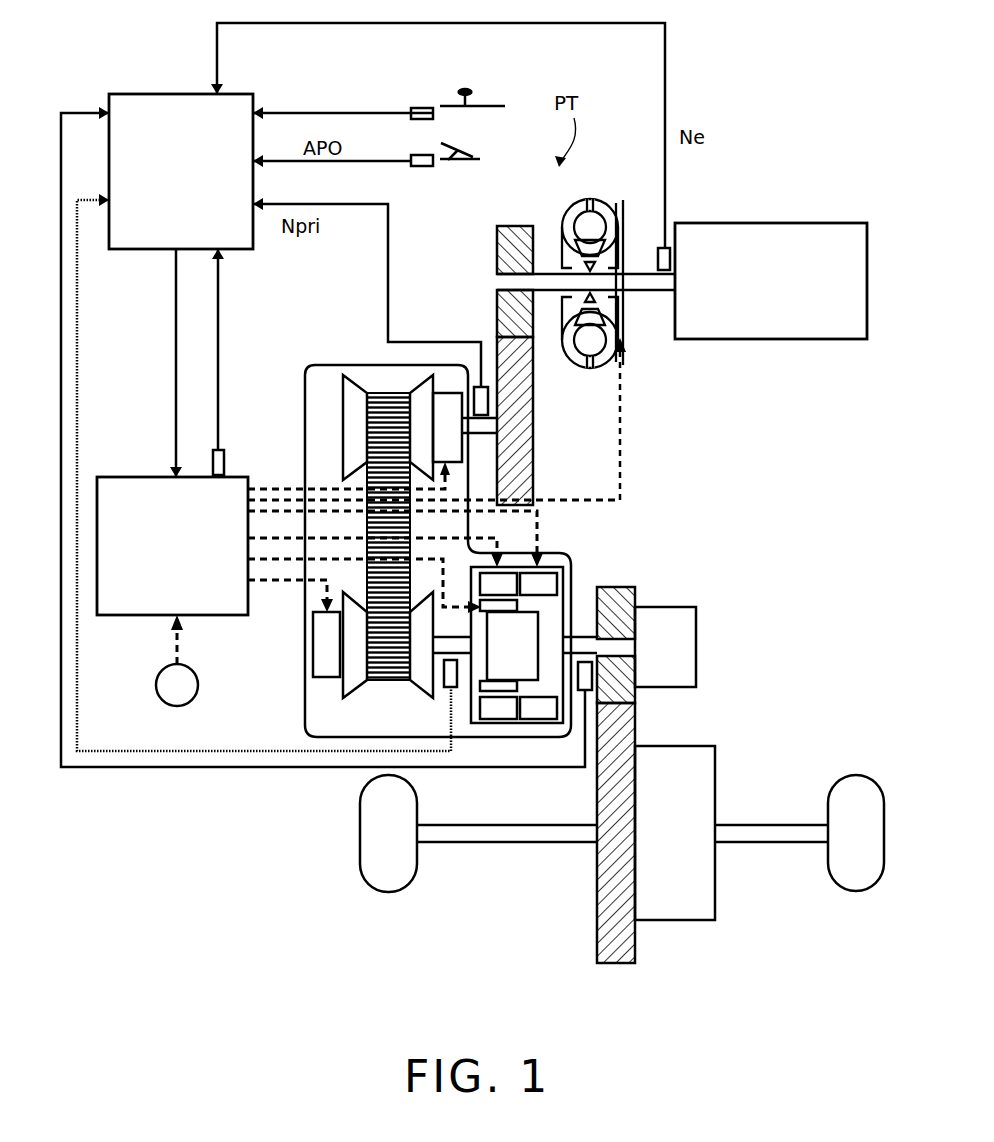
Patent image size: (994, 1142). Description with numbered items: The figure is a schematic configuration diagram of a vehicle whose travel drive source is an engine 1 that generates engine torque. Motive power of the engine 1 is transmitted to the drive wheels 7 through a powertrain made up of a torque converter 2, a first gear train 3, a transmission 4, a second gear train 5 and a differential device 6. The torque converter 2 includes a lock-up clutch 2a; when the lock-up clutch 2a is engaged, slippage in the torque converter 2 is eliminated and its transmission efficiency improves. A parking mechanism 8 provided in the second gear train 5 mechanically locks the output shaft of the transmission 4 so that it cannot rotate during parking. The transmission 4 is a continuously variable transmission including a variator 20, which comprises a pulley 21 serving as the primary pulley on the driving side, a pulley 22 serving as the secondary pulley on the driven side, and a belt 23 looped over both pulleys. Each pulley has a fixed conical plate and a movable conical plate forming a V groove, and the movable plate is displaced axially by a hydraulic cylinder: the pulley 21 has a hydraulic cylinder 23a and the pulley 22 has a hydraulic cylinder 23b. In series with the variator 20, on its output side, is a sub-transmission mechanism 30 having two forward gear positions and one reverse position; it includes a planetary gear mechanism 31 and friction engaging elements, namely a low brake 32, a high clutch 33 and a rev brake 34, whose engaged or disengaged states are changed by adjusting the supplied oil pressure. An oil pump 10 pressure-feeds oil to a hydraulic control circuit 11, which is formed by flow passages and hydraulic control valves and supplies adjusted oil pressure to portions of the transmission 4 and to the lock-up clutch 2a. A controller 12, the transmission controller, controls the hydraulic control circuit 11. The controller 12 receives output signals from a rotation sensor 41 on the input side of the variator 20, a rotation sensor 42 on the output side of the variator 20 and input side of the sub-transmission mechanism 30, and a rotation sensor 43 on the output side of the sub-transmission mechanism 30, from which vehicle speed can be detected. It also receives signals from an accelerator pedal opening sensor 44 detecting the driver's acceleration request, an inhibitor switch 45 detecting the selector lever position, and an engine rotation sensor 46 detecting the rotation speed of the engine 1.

The engine 1 is at (852, 232).
The torque converter 2 is at (628, 290).
The lock-up clutch 2a is at (624, 308).
The first gear train 3 is at (516, 218).
The transmission 4 is at (356, 366).
The second gear train 5 is at (617, 976).
The differential device 6 is at (668, 906).
The drive wheels 7 is at (388, 892).
The parking mechanism 8 is at (698, 633).
The oil pump 10 is at (158, 672).
The hydraulic control circuit 11 is at (128, 482).
The controller 12 is at (240, 104).
The variator 20 is at (324, 396).
The pulley 21 is at (355, 426).
The pulley 22 is at (353, 662).
The belt 23 is at (391, 396).
The hydraulic cylinder 23a is at (446, 410).
The hydraulic cylinder 23b is at (323, 652).
The sub-transmission mechanism 30 is at (565, 575).
The planetary gear mechanism 31 is at (522, 628).
The low brake 32 is at (503, 585).
The high clutch 33 is at (486, 605).
The rev brake 34 is at (537, 583).
The rotation sensor 41 is at (482, 398).
The rotation sensor 42 is at (441, 670).
The rotation sensor 43 is at (592, 674).
The accelerator pedal opening sensor 44 is at (420, 168).
The inhibitor switch 45 is at (420, 106).
The engine rotation sensor 46 is at (660, 256).